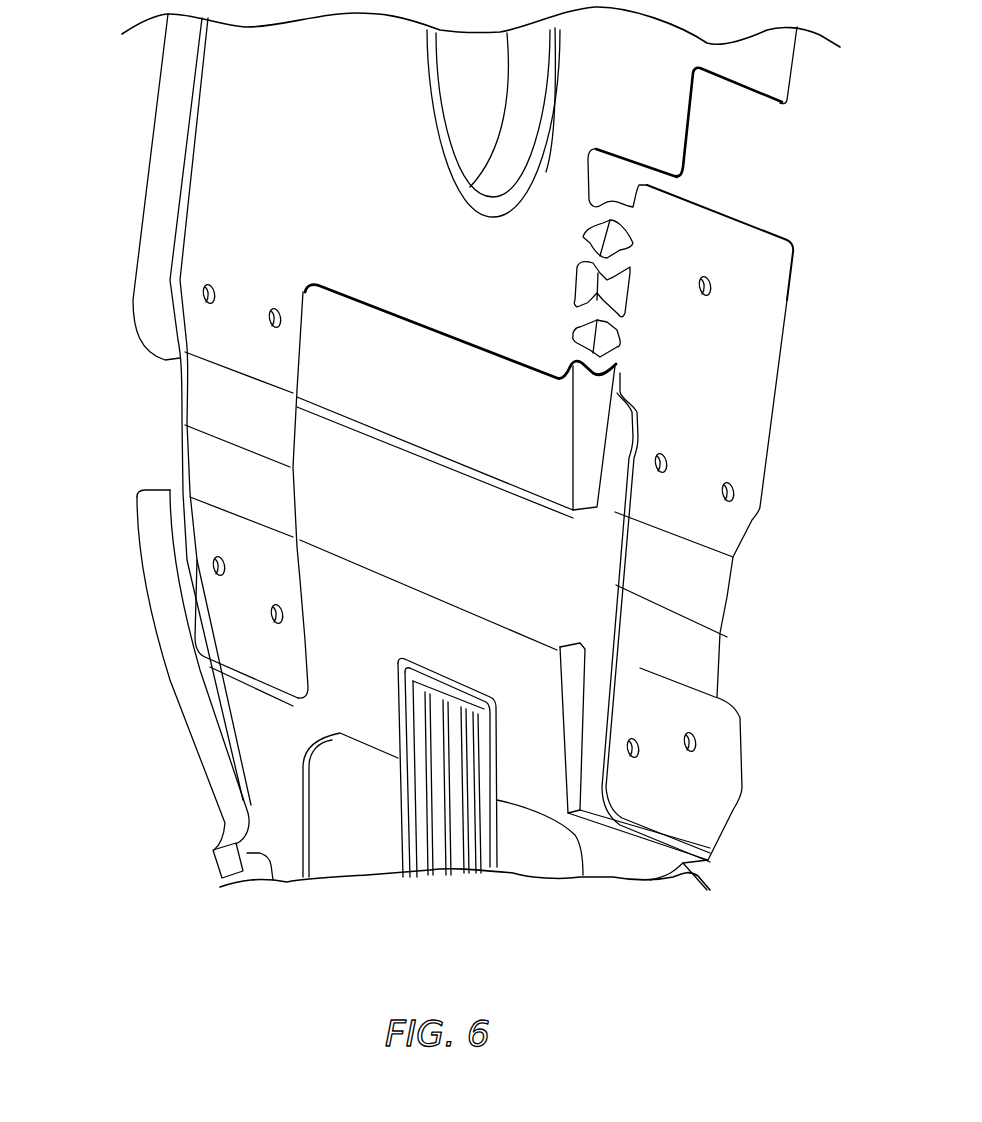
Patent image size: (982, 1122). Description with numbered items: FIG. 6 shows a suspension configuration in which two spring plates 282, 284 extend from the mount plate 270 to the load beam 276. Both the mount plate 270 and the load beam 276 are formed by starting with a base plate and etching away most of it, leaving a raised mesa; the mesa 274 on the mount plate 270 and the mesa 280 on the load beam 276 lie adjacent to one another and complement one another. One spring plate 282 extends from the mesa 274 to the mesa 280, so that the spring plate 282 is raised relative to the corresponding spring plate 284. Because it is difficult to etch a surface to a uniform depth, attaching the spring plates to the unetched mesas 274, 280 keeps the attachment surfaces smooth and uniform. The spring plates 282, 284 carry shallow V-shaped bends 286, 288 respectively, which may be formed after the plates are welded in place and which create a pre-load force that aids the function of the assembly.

The mount plate 270 is at (822, 159).
The mesa 274 is at (617, 478).
The load beam 276 is at (167, 721).
The mesa 280 is at (732, 744).
The spring plate 282 is at (755, 606).
The spring plate 284 is at (333, 463).
The V-shaped bend 286 is at (177, 421).
The V-shaped bend 288 is at (607, 585).